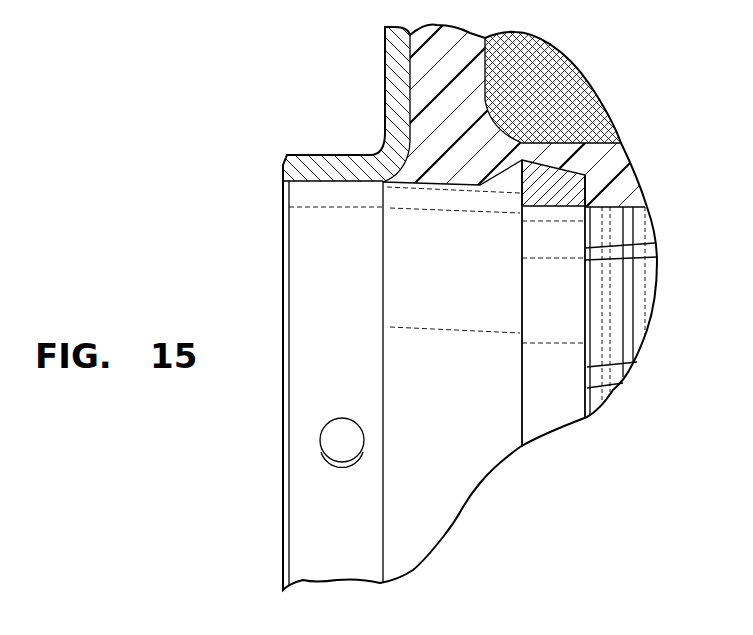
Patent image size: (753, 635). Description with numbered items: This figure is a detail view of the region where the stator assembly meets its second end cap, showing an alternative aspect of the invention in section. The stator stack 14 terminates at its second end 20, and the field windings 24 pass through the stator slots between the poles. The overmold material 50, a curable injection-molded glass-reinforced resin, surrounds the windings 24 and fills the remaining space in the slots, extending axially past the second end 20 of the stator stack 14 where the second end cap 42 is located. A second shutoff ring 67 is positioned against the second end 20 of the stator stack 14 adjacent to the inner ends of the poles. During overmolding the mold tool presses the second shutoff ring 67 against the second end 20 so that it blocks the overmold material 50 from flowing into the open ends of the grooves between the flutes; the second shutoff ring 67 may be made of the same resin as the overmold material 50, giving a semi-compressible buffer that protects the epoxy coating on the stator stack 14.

The stator stack 14 is at (640, 230).
The second end of the stator stack 20 is at (585, 228).
The field windings 24 is at (568, 90).
The second end cap 42 is at (322, 152).
The overmold material 50 is at (428, 86).
The second shutoff ring 67 is at (527, 192).